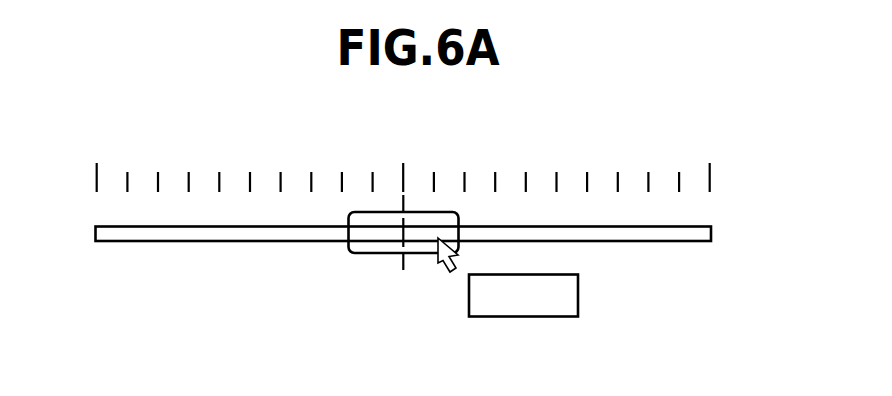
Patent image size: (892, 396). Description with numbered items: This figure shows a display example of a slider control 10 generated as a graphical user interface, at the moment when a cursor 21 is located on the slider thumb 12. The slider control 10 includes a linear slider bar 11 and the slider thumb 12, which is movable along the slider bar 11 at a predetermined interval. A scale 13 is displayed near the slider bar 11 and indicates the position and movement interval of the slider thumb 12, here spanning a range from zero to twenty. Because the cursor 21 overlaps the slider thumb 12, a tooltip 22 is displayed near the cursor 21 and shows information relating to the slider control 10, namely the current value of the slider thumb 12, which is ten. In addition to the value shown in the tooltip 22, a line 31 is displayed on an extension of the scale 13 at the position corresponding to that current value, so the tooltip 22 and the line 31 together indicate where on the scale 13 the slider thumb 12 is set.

The slider control 10 is at (404, 285).
The slider bar 11 is at (258, 243).
The slider thumb 12 is at (404, 262).
The scale 13 is at (712, 177).
The cursor 21 is at (440, 277).
The tooltip 22 is at (580, 293).
The line 31 is at (405, 262).